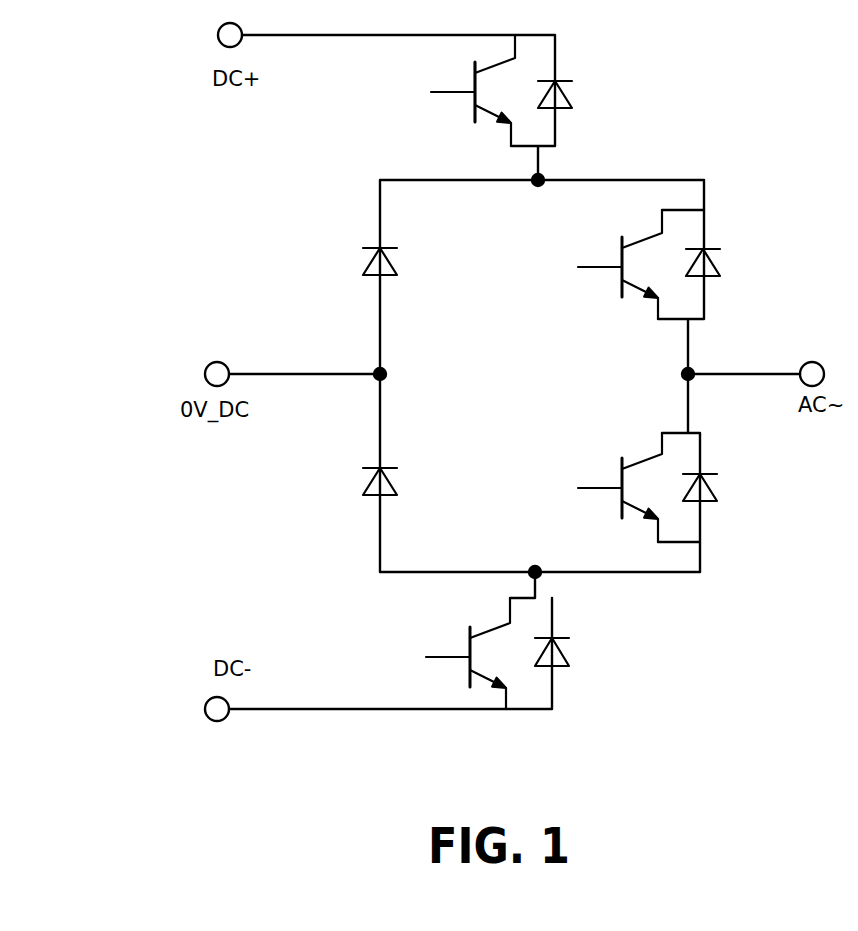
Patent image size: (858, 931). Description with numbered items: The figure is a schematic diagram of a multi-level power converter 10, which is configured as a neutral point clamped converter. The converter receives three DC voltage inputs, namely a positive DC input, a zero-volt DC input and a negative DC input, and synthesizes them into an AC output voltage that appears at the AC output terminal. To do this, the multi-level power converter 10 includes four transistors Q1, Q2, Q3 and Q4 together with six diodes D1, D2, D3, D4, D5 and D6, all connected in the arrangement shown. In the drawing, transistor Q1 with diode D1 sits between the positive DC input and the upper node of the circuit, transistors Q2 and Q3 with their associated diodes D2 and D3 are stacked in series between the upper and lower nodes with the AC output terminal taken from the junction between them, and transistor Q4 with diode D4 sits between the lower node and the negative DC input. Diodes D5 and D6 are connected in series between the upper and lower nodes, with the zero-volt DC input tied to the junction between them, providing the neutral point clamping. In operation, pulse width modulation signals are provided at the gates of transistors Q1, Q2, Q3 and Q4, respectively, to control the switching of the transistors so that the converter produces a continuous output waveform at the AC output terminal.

The multi-level power converter 10 is at (146, 151).
The transistor Q1 is at (473, 90).
The transistor Q2 is at (620, 264).
The transistor Q3 is at (620, 487).
The transistor Q4 is at (468, 653).
The diode D1 is at (577, 96).
The diode D2 is at (724, 264).
The diode D3 is at (723, 488).
The diode D4 is at (573, 654).
The diode D5 is at (355, 264).
The diode D6 is at (355, 484).